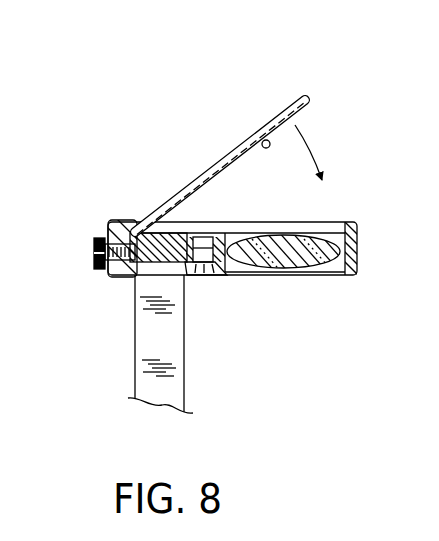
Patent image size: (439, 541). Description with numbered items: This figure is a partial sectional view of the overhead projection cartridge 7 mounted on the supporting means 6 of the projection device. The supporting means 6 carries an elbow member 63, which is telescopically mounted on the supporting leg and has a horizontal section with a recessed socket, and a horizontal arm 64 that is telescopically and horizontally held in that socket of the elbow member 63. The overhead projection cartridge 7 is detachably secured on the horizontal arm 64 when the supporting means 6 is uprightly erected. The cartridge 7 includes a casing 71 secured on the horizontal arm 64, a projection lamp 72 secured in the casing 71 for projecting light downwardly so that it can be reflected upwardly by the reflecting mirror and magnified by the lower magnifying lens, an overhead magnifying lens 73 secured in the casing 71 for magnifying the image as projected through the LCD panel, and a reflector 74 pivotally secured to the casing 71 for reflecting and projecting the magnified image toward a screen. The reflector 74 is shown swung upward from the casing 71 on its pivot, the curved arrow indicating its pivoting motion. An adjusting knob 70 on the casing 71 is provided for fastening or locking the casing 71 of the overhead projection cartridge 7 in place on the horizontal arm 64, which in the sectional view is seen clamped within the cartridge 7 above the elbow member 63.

The supporting means 6 is at (133, 363).
The overhead projection cartridge 7 is at (214, 164).
The elbow member 63 is at (177, 393).
The horizontal arm 64 is at (152, 258).
The adjusting knob 70 is at (95, 247).
The casing 71 is at (353, 263).
The projection lamp 72 is at (207, 277).
The overhead magnifying lens 73 is at (313, 240).
The reflector 74 is at (267, 130).